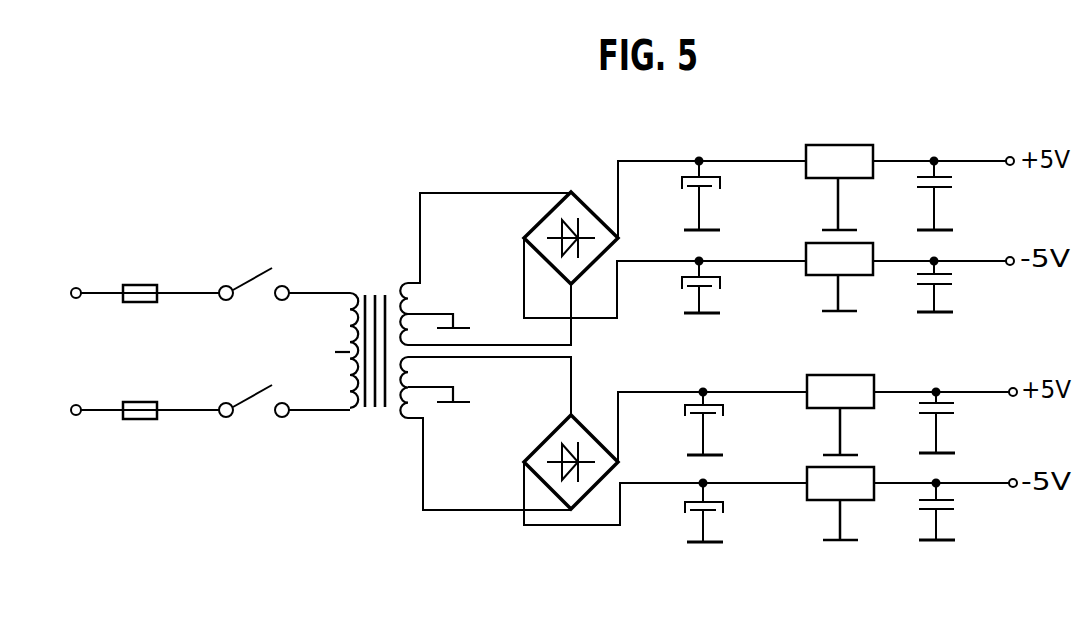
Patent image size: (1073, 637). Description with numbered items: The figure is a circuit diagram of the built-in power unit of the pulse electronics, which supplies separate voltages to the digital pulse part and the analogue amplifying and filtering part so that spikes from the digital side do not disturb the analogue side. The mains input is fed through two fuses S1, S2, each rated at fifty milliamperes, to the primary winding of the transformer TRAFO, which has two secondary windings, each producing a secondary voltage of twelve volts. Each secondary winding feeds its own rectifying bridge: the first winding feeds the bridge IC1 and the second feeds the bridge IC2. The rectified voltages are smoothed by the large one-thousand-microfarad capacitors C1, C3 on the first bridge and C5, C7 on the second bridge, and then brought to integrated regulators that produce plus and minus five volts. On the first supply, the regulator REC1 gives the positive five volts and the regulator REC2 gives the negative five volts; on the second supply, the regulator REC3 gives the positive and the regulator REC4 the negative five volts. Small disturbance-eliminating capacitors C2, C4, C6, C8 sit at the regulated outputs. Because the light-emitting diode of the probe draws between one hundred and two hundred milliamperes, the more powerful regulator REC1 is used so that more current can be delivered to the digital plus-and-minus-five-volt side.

The fuse S1 is at (140, 275).
The fuse S2 is at (140, 395).
The transformer TRAFO is at (402, 334).
The rectifying bridge IC1 is at (571, 217).
The rectifying bridge IC2 is at (568, 451).
The smoothing capacitor C1 is at (718, 194).
The disturbance-eliminating capacitor C2 is at (955, 194).
The smoothing capacitor C3 is at (718, 286).
The disturbance-eliminating capacitor C4 is at (955, 285).
The smoothing capacitor C5 is at (724, 422).
The disturbance-eliminating capacitor C6 is at (958, 421).
The smoothing capacitor C7 is at (725, 511).
The disturbance-eliminating capacitor C8 is at (957, 510).
The integrated regulator REC1 is at (839, 187).
The integrated regulator REC2 is at (806, 255).
The integrated regulator REC3 is at (807, 387).
The integrated regulator REC4 is at (807, 481).